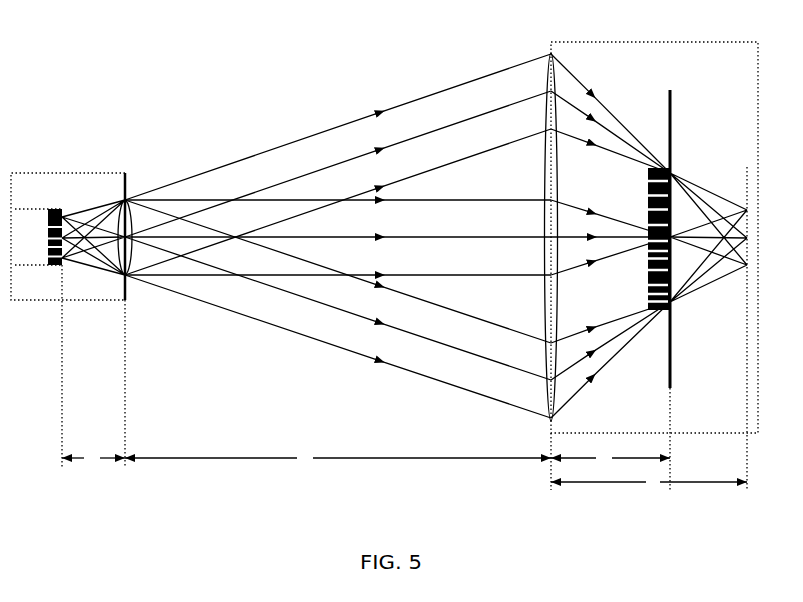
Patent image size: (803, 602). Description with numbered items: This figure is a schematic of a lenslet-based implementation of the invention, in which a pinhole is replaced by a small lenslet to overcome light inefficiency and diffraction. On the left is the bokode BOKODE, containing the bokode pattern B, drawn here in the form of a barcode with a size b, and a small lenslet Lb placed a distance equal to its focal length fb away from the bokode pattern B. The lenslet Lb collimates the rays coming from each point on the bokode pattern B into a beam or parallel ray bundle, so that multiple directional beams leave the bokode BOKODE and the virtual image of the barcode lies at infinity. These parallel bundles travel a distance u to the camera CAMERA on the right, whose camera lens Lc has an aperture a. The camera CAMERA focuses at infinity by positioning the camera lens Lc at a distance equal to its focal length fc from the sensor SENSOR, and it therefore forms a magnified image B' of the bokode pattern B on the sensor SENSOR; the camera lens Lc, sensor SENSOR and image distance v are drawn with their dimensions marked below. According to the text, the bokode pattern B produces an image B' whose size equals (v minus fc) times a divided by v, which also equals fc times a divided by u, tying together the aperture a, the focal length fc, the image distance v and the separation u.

The bokode BOKODE is at (68, 227).
The bokode pattern B is at (55, 228).
The bokode pattern size b is at (29, 209).
The lenslet Lb is at (130, 236).
The camera lens aperture a is at (338, 228).
The camera CAMERA is at (654, 228).
The camera lens Lc is at (560, 236).
The sensor SENSOR is at (671, 229).
The image of the bokode pattern B' is at (649, 239).
The lenslet focal length fb is at (93, 459).
The distance between lenslet and camera lens u is at (338, 458).
The camera lens focal length fc is at (610, 459).
The image distance v is at (649, 482).